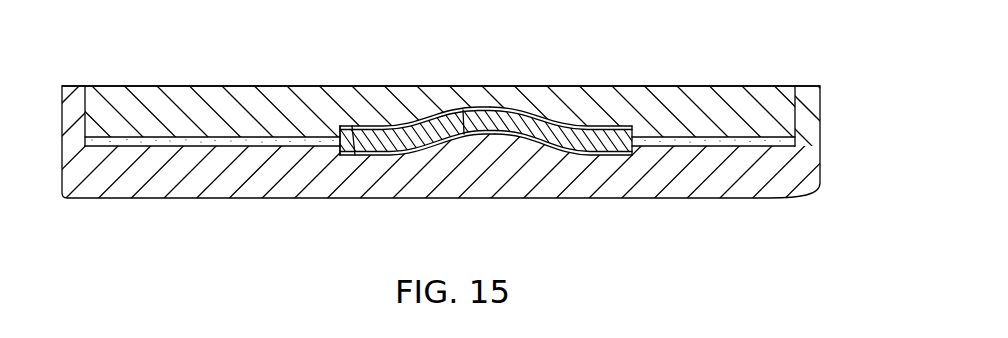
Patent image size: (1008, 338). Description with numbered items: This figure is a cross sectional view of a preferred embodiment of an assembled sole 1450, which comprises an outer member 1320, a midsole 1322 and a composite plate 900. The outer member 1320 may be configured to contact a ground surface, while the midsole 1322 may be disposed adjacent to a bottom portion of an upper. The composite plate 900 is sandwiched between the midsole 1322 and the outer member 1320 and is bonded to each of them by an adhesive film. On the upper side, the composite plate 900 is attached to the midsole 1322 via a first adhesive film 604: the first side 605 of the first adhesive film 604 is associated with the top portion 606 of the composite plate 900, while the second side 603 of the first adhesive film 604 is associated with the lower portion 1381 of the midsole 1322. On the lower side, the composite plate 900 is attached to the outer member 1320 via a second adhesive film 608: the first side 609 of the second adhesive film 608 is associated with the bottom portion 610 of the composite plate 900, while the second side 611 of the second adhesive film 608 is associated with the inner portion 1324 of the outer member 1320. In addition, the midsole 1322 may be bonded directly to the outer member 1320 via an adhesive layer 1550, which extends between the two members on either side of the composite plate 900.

The outer member 1320 is at (150, 198).
The midsole 1322 is at (187, 87).
The inner portion of outer member 1324 is at (355, 155).
The assembled sole 1450 is at (287, 41).
The adhesive layer 1550 is at (707, 137).
The composite plate 900 is at (483, 131).
The second side of first adhesive film 603 is at (505, 107).
The first adhesive film 604 is at (422, 113).
The first side of first adhesive film 605 is at (475, 108).
The top portion of composite plate 606 is at (464, 134).
The second adhesive film 608 is at (530, 146).
The first side of second adhesive film 609 is at (352, 126).
The bottom portion of composite plate 610 is at (370, 155).
The second side of second adhesive film 611 is at (345, 155).
The lower portion of midsole 1381 is at (486, 106).